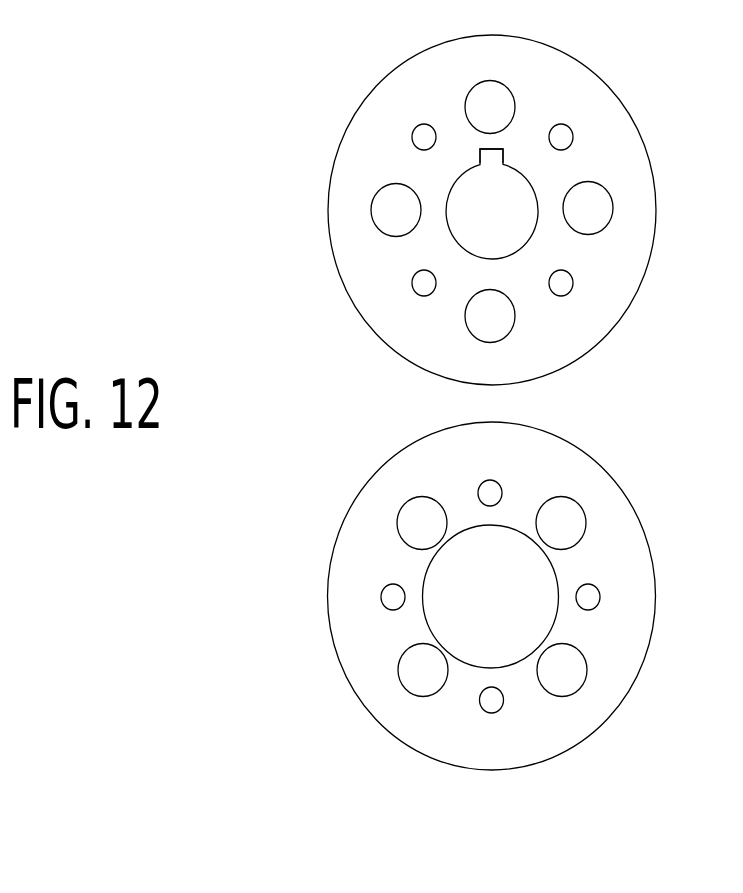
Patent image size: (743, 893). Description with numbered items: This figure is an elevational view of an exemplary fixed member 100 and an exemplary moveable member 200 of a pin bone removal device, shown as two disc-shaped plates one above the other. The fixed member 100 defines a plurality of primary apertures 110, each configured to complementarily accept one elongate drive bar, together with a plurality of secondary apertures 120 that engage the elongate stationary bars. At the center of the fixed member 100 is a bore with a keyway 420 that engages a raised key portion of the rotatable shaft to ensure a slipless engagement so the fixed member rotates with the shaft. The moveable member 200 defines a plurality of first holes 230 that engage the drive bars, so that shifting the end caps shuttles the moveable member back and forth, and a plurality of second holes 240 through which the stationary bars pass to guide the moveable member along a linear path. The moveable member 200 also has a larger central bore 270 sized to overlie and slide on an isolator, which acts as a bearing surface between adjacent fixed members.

The fixed member 100 is at (424, 330).
The primary aperture 110 is at (587, 212).
The secondary aperture 120 is at (554, 139).
The central bore 270 is at (487, 209).
The keyway 420 is at (491, 155).
The moveable member 200 is at (552, 478).
The first hole 230 is at (415, 675).
The second hole 240 is at (397, 598).